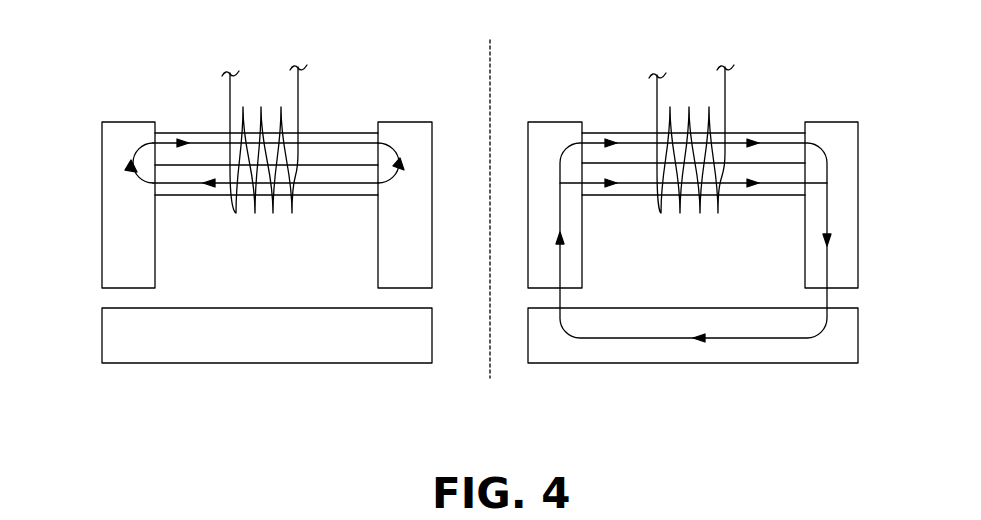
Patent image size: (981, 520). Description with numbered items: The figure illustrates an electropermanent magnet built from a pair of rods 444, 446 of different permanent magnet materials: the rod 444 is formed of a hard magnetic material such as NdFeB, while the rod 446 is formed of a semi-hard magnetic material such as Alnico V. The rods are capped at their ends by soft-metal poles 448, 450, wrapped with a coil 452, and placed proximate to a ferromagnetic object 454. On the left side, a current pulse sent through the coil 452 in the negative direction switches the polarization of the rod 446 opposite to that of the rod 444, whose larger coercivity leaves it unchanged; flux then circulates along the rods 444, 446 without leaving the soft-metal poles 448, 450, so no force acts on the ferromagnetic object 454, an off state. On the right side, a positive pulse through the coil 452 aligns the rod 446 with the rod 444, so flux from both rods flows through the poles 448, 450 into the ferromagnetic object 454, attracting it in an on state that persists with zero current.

The rod of hard magnetic material 444 is at (350, 133).
The rod of semi-hard magnetic material 446 is at (195, 197).
The soft-metal pole 448 is at (378, 233).
The soft-metal pole 450 is at (102, 192).
The coil 452 is at (298, 80).
The ferromagnetic object 454 is at (300, 363).